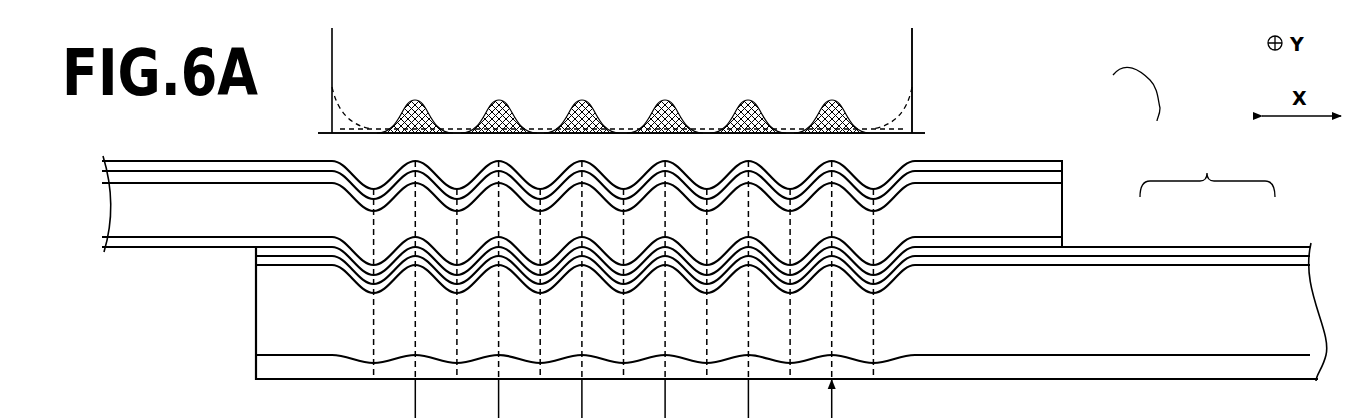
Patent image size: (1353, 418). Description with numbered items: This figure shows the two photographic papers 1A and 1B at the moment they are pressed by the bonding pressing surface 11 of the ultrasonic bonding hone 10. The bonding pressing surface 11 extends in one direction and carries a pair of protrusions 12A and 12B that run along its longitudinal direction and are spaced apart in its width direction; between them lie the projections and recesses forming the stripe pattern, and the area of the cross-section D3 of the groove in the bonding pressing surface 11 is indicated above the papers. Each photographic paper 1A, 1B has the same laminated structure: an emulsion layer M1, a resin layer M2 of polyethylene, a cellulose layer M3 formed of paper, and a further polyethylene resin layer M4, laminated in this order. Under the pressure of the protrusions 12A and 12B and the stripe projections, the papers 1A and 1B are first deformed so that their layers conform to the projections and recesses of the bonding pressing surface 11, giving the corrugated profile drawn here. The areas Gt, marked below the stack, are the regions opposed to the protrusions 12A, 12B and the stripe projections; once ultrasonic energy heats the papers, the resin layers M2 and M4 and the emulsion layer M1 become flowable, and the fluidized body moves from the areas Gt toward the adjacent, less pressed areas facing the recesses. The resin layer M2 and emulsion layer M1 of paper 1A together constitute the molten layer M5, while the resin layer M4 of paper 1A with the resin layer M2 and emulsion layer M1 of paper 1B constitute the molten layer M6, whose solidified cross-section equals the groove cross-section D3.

The photographic paper 1A is at (241, 158).
The photographic paper 1B is at (1291, 231).
The ultrasonic bonding hone 10 is at (916, 45).
The bonding pressing surface 11 is at (904, 82).
The protrusion 12A is at (890, 126).
The protrusion 12B is at (352, 116).
The cross-section of the groove D3 is at (415, 102).
The emulsion layer M1 is at (262, 253).
The resin layer M2 is at (262, 262).
The cellulose layer M3 is at (268, 316).
The resin layer M4 is at (268, 370).
The molten layer M5 is at (1146, 88).
The molten layer M6 is at (1207, 172).
The areas opposed to the protrusions Gt is at (873, 380).